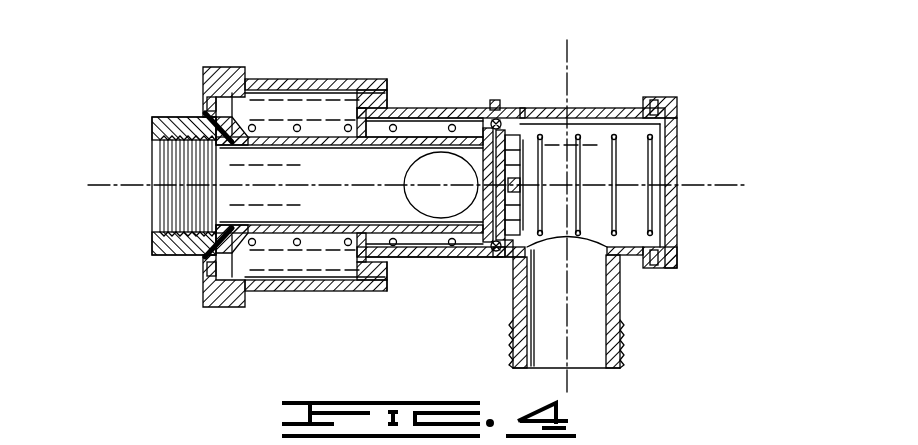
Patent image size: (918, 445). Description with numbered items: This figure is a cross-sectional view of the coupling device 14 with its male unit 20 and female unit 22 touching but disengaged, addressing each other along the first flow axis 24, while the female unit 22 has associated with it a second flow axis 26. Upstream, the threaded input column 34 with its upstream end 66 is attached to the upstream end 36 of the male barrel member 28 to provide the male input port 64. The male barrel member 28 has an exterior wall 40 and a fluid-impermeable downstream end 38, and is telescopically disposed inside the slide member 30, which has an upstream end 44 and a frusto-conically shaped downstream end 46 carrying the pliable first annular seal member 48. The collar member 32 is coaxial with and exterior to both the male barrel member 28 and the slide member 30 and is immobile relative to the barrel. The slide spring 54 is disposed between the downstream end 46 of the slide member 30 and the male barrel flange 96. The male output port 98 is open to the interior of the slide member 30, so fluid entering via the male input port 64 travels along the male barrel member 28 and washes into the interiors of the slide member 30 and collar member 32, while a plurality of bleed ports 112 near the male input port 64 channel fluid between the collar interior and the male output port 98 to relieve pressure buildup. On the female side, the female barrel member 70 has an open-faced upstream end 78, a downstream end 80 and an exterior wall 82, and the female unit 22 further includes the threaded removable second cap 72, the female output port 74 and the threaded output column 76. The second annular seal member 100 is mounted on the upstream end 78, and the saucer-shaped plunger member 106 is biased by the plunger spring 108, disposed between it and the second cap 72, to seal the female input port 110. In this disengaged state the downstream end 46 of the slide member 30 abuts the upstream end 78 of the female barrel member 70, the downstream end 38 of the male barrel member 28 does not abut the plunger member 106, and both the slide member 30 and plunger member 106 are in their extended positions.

The coupling device 14 is at (450, 23).
The male unit 20 is at (218, 60).
The female unit 22 is at (692, 114).
The first flow axis 24 is at (716, 182).
The second flow axis 26 is at (562, 384).
The male barrel member 28 is at (441, 137).
The slide member 30 is at (452, 108).
The collar member 32 is at (375, 80).
The threaded input column 34 is at (155, 120).
The upstream end of male barrel member 36 is at (212, 125).
The downstream end of male barrel member 38 is at (460, 258).
The exterior wall of male barrel member 40 is at (330, 135).
The upstream end of slide member 44 is at (386, 108).
The downstream end of slide member 46 is at (491, 118).
The first annular seal member 48 is at (466, 125).
The slide spring 54 is at (298, 124).
The male input port 64 is at (145, 168).
The upstream end of threaded input column 66 is at (152, 133).
The female barrel member 70 is at (612, 108).
The threaded removable second cap 72 is at (678, 98).
The female output port 74 is at (595, 286).
The threaded output column 76 is at (622, 333).
The upstream end of female barrel member 78 is at (500, 108).
The downstream end of female barrel member 80 is at (653, 100).
The exterior wall of female barrel member 82 is at (575, 108).
The male barrel flange 96 is at (214, 103).
The male output port 98 is at (406, 203).
The second annular seal member 100 is at (507, 125).
The plunger member 106 is at (509, 258).
The plunger spring 108 is at (652, 233).
The female input port 110 is at (496, 252).
The bleed ports 112 is at (220, 220).